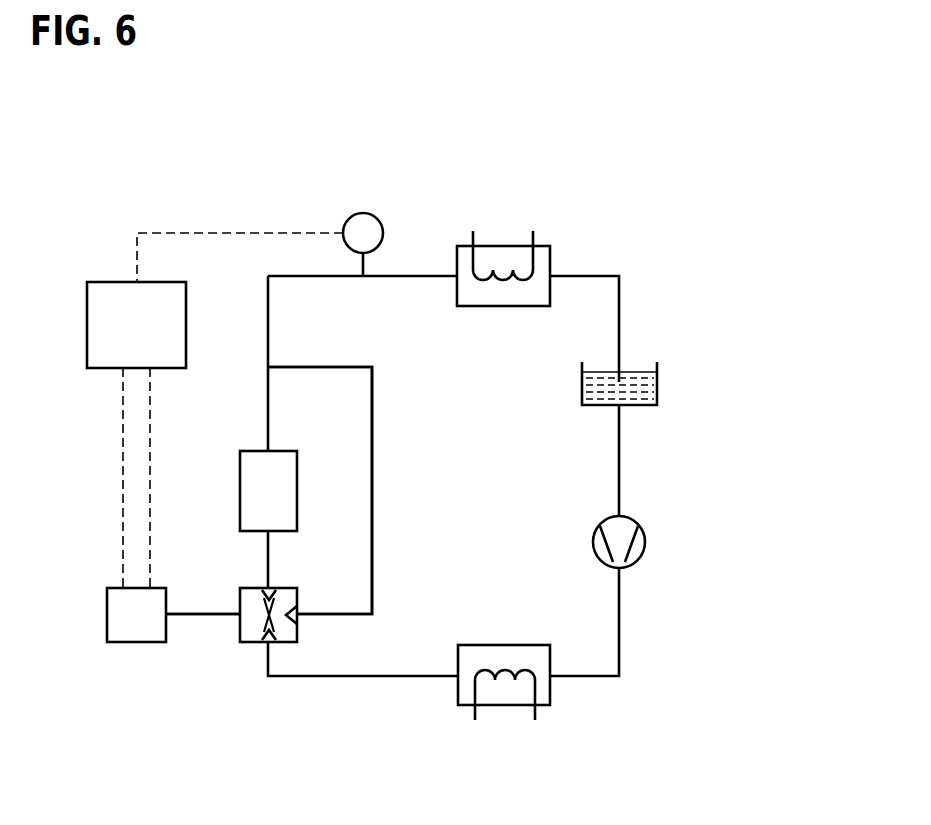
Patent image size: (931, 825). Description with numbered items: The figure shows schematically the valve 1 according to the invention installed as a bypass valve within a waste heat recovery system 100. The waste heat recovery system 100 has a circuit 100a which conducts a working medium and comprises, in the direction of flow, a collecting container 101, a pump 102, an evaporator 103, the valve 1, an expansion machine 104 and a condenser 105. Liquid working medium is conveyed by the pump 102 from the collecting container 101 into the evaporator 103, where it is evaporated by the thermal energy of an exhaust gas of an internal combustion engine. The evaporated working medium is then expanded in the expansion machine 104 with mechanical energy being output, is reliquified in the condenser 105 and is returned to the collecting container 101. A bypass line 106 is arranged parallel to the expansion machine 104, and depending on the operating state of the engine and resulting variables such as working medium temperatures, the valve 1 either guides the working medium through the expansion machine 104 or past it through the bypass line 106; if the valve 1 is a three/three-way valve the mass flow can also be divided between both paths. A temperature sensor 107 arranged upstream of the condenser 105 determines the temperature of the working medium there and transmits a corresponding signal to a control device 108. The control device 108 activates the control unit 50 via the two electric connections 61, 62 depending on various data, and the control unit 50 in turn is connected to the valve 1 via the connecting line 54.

The valve 1 is at (256, 622).
The control unit 50 is at (133, 618).
The connecting line 54 is at (205, 612).
The electric connection 61 is at (153, 425).
The electric connection 62 is at (120, 425).
The waste heat recovery system 100 is at (707, 218).
The circuit 100a is at (636, 611).
The collecting container 101 is at (657, 387).
The pump 102 is at (622, 541).
The evaporator 103 is at (507, 697).
The expansion machine 104 is at (270, 494).
The condenser 105 is at (501, 256).
The bypass line 106 is at (374, 428).
The temperature sensor 107 is at (363, 213).
The control device 108 is at (112, 320).